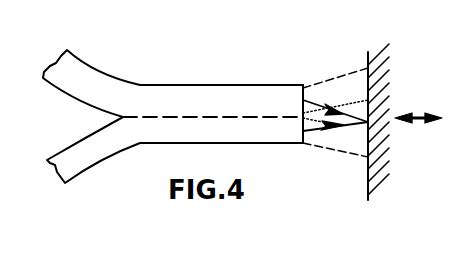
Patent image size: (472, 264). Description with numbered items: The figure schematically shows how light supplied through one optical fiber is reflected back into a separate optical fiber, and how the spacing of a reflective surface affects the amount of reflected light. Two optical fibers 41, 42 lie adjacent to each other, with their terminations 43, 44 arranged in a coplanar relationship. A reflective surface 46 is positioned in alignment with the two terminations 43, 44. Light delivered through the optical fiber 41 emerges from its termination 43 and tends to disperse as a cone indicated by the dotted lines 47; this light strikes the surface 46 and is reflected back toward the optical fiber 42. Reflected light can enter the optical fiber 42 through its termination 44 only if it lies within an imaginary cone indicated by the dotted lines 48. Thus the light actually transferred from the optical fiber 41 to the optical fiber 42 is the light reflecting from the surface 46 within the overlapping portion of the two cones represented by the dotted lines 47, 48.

The optical fiber 41 is at (197, 85).
The optical fiber 42 is at (202, 143).
The termination 43 is at (305, 86).
The termination 44 is at (303, 143).
The reflective surface 46 is at (368, 168).
The dotted lines 47 is at (328, 75).
The dotted lines 48 is at (340, 109).